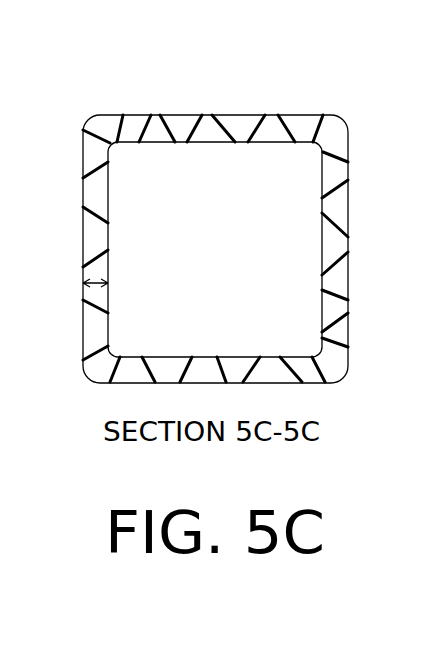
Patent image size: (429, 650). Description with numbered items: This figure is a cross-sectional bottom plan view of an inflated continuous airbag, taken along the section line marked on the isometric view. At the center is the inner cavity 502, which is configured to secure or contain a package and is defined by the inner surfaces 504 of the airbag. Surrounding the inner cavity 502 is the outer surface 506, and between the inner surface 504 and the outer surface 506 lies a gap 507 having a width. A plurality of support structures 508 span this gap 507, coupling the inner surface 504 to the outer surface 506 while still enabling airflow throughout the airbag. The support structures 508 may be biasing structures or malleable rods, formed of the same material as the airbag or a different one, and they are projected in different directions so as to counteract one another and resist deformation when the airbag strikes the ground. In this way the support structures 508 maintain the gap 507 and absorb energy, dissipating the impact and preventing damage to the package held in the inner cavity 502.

The inner cavity 502 is at (214, 156).
The inner surface 504 is at (349, 190).
The outer surface 506 is at (323, 148).
The gap 507 is at (92, 280).
The support structure 508 is at (94, 130).